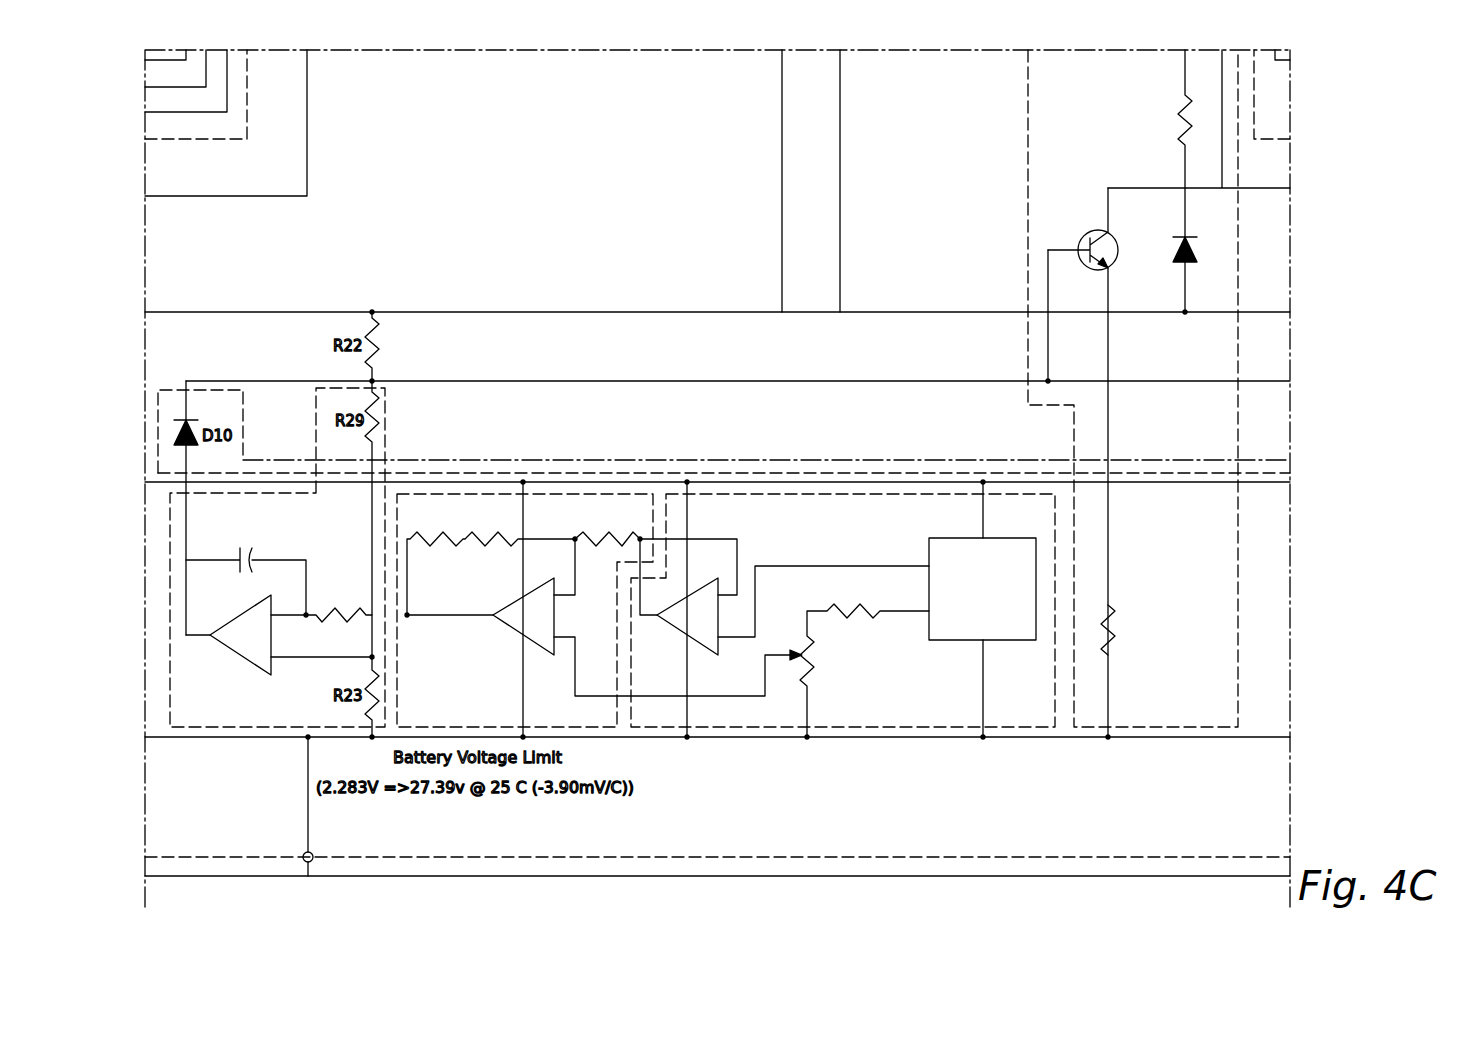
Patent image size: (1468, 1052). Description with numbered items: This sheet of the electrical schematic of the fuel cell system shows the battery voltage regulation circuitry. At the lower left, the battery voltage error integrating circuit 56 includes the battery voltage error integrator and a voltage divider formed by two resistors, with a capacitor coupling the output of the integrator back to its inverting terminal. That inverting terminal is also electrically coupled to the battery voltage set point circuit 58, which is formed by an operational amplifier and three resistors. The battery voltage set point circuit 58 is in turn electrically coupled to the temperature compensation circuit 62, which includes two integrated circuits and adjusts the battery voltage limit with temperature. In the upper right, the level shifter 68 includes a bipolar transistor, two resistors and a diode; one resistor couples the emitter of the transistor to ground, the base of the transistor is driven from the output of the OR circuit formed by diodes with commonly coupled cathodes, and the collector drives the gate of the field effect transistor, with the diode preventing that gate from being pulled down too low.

The battery voltage error integrating circuit 56 is at (222, 740).
The battery voltage set point circuit 58 is at (588, 737).
The temperature compensation circuit 62 is at (904, 740).
The level shifter 68 is at (1027, 113).